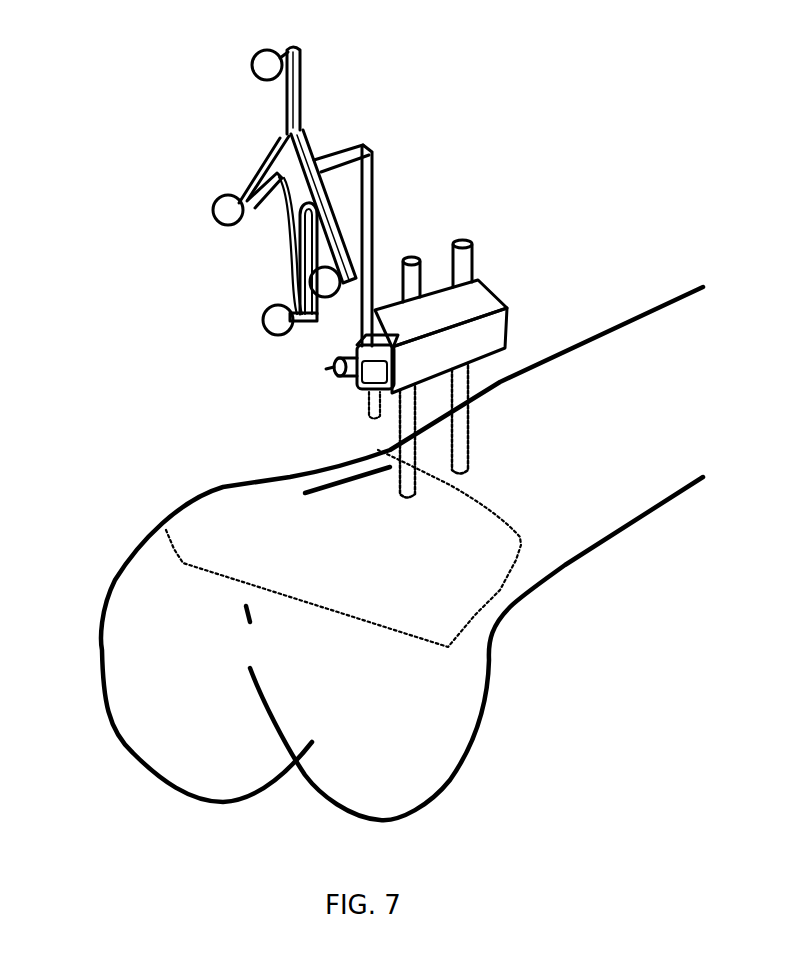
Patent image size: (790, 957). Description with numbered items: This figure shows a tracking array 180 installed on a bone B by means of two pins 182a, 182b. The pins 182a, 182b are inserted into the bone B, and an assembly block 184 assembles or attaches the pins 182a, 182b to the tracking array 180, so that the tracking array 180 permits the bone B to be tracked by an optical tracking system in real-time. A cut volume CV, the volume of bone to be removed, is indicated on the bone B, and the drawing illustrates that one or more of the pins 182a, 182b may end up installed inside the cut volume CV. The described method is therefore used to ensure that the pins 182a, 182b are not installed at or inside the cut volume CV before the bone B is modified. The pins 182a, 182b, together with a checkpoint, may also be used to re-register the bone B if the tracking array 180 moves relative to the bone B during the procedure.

The tracking array 180 is at (266, 165).
The pin 182a is at (413, 256).
The pin 182b is at (462, 243).
The assembly block 184 is at (507, 313).
The cut volume CV is at (173, 553).
The bone B is at (505, 712).